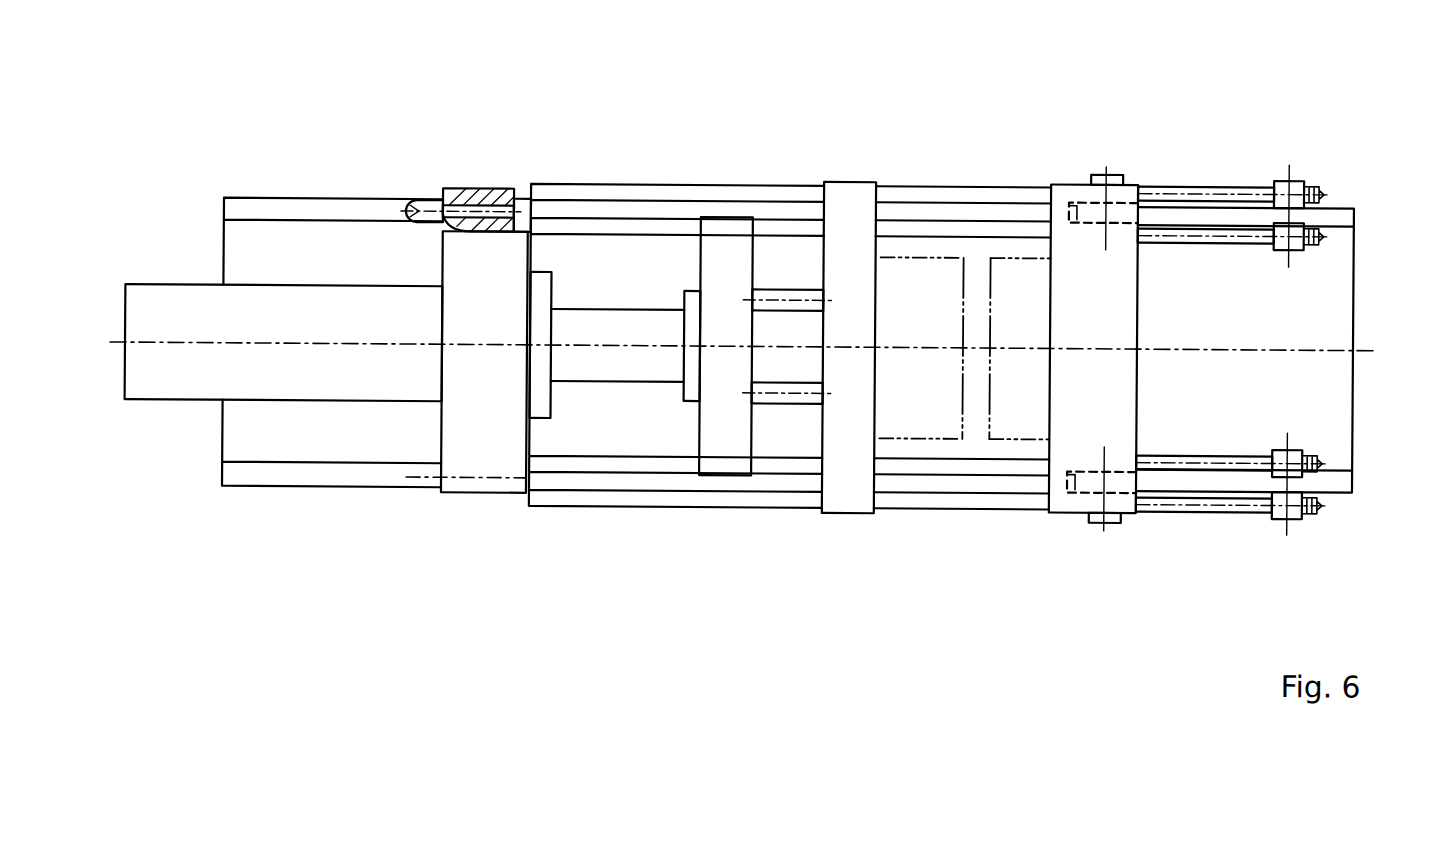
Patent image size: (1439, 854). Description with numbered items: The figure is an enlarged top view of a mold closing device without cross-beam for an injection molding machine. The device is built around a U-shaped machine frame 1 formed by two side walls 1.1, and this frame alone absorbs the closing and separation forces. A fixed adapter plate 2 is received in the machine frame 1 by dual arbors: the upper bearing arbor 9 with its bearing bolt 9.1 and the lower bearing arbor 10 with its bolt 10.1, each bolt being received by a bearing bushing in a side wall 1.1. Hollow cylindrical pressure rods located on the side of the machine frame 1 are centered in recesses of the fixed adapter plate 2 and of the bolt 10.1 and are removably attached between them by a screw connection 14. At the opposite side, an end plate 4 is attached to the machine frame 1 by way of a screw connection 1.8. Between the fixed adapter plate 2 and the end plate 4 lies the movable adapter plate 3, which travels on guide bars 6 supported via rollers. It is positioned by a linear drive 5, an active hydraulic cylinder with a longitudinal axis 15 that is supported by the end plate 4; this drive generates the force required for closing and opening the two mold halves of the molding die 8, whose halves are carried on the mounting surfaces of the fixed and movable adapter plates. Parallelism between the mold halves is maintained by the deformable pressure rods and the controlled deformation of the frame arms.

The machine frame 1 is at (1352, 196).
The side wall 1.1 is at (288, 195).
The screw connection 1.8 is at (507, 197).
The fixed adapter plate 2 is at (1058, 193).
The movable adapter plate 3 is at (847, 202).
The end plate 4 is at (470, 186).
The linear drive 5 is at (357, 378).
The guide bar 6 is at (672, 228).
The molding die 8 is at (1013, 282).
The upper bearing arbor 9 is at (1107, 166).
The bearing bolt 9.1 is at (1123, 170).
The bearing arbor 10 is at (1290, 165).
The bolt 10.1 is at (1287, 170).
The screw connection 14 is at (1318, 185).
The longitudinal axis 15 is at (221, 342).